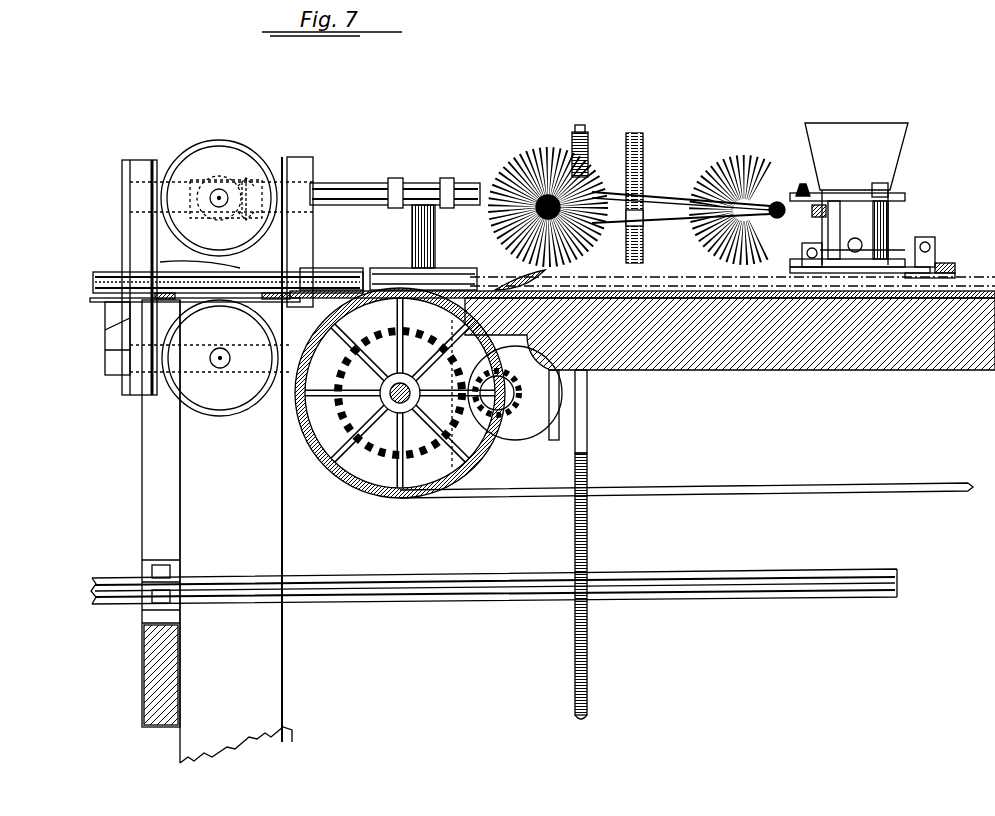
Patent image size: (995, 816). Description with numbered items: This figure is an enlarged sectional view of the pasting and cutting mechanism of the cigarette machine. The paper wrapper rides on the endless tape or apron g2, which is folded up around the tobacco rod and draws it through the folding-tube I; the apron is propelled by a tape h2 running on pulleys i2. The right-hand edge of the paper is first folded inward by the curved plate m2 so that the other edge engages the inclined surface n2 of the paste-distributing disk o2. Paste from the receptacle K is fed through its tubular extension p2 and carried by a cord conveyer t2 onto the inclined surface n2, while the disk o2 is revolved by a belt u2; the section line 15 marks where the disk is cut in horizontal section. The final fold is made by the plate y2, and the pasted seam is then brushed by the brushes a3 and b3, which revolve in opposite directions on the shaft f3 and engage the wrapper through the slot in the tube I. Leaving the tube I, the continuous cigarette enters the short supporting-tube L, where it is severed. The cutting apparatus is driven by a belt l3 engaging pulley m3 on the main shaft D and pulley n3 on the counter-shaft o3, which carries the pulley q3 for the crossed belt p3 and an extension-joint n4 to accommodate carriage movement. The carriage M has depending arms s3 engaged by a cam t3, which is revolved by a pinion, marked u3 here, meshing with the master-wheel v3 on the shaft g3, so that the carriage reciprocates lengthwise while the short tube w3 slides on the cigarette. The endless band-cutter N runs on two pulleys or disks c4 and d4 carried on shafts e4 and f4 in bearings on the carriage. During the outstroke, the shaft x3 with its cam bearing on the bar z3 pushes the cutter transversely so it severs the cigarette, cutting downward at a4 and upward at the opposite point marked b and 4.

The carriage M is at (136, 228).
The pulley c4 is at (222, 151).
The shaft e4 is at (222, 195).
The supporting-tube L is at (388, 265).
The main frame upright b is at (150, 305).
The plate 4 is at (182, 312).
The shaft x3 is at (108, 350).
The bar z3 is at (180, 263).
The band-cutter N is at (215, 267).
The pulley d4 is at (186, 386).
The shaft f4 is at (216, 366).
The extension-joint n4 is at (336, 185).
The counter-shaft o3 is at (460, 185).
The short tube w3 is at (332, 275).
The cutting point a4 is at (281, 267).
The brush a3 is at (508, 146).
The pulley n3 is at (584, 130).
The belt l3 is at (579, 128).
The crossed belt p3 is at (634, 132).
The pulley q3 is at (636, 132).
The shaft f3 is at (493, 185).
The brush b3 is at (740, 140).
The belt u2 is at (803, 185).
The paste-receptacle K is at (880, 150).
The paste-distributing disk o2 is at (896, 197).
The cord conveyer t2 is at (892, 240).
The tubular extension p2 is at (862, 244).
The section line 15 is at (893, 249).
The inclined surface n2 is at (916, 276).
The curved plate m2 is at (932, 270).
The plate y2 is at (837, 303).
The folding-tube I is at (710, 280).
The shaft g3 is at (300, 440).
The master-wheel v3 is at (386, 437).
The tape h2 is at (746, 300).
The pulley i2 is at (439, 474).
The endless tape g2 is at (498, 272).
The disk u3 is at (500, 403).
The depending arm s3 is at (462, 402).
The cam t3 is at (530, 398).
The pulley m3 is at (594, 526).
The main shaft D is at (712, 600).